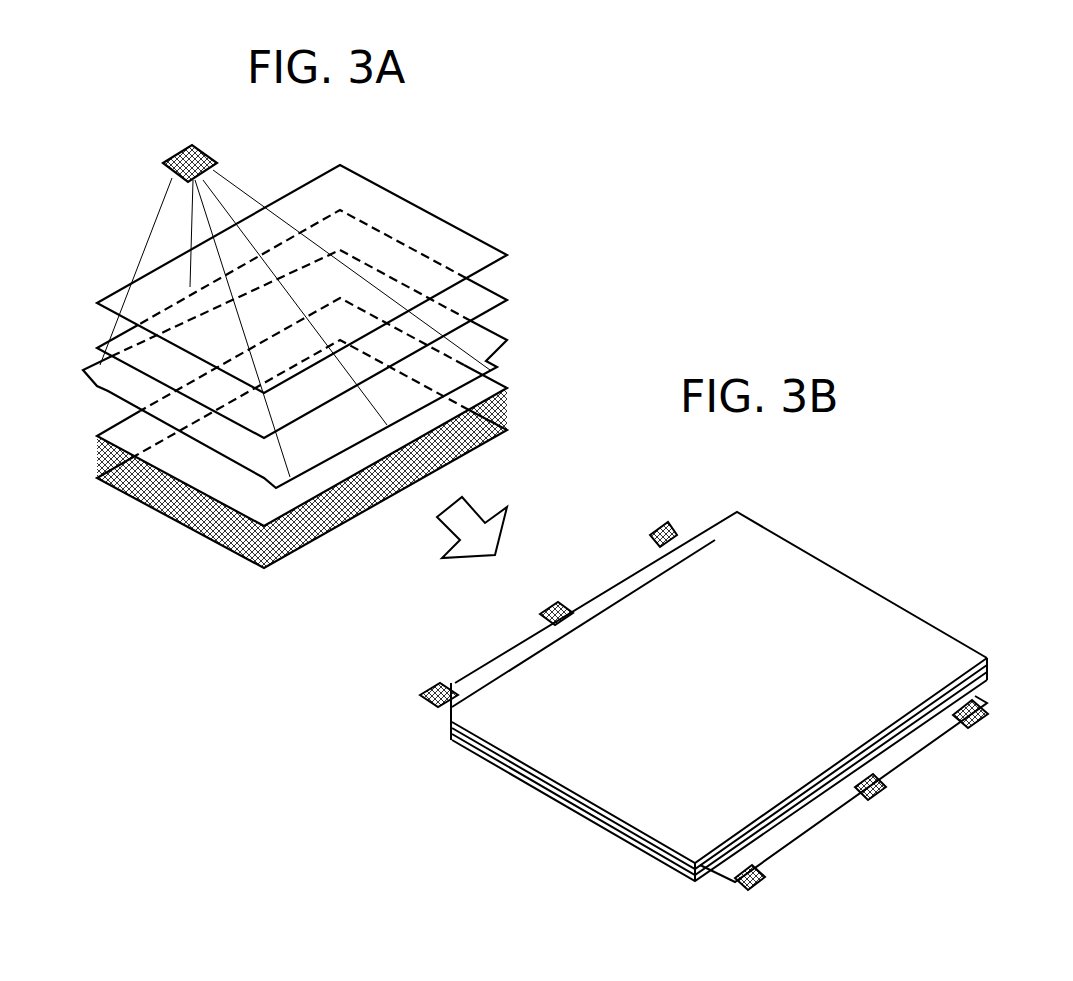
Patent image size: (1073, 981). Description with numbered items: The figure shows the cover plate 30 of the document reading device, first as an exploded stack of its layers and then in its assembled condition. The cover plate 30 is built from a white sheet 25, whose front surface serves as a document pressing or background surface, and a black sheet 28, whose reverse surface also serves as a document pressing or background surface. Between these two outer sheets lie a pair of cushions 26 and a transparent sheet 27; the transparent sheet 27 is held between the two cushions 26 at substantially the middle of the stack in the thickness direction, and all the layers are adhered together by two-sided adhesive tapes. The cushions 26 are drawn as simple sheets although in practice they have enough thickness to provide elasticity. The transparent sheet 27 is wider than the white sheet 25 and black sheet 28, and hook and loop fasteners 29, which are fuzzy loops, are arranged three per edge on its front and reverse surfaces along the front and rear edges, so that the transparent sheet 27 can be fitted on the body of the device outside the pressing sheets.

In FIG. 3A, the white sheet 25 is at (413, 215).
In FIG. 3B, the white sheet 25 is at (798, 540).
In FIG. 3A, the cushions 26 is at (489, 300).
In FIG. 3A, the transparent sheet 27 is at (483, 342).
In FIG. 3B, the transparent sheet 27 is at (688, 536).
In FIG. 3A, the black sheet 28 is at (500, 427).
In FIG. 3B, the black sheet 28 is at (527, 783).
In FIG. 3A, the hook and loop fasteners 29 is at (217, 158).
In FIG. 3B, the hook and loop fasteners 29 is at (430, 684).
In FIG. 3B, the cover plate 30 is at (728, 688).